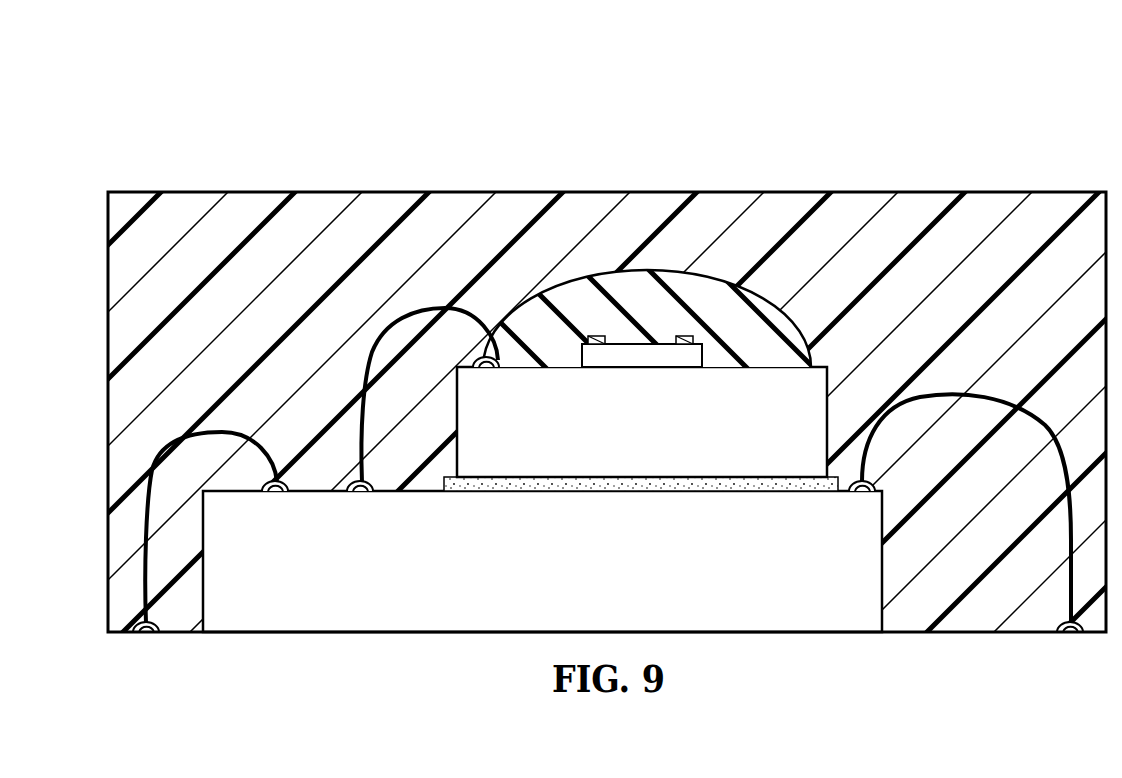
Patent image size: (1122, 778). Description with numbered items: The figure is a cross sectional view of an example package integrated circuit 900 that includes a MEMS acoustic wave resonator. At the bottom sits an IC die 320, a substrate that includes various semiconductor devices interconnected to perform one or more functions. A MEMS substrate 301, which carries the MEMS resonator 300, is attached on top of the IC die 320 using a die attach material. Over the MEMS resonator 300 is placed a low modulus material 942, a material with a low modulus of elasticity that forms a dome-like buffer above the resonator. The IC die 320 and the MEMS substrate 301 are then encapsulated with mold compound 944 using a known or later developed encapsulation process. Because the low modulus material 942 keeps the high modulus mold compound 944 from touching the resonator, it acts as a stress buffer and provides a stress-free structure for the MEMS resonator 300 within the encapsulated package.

The package integrated circuit 900 is at (249, 136).
The low modulus material 942 is at (577, 289).
The mold compound 944 is at (116, 401).
The MEMS resonator 300 is at (706, 350).
The MEMS substrate 301 is at (663, 457).
The IC die 320 is at (565, 596).